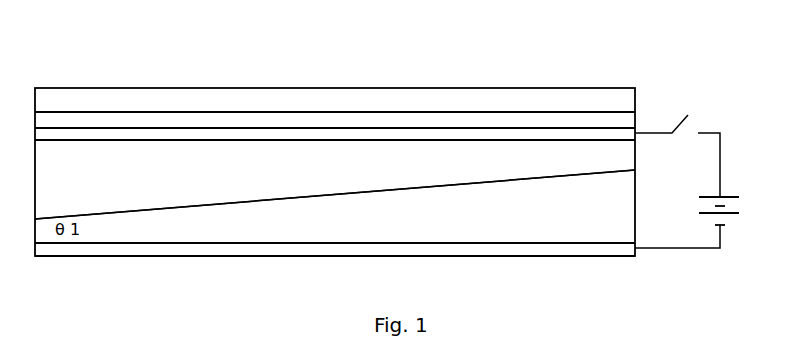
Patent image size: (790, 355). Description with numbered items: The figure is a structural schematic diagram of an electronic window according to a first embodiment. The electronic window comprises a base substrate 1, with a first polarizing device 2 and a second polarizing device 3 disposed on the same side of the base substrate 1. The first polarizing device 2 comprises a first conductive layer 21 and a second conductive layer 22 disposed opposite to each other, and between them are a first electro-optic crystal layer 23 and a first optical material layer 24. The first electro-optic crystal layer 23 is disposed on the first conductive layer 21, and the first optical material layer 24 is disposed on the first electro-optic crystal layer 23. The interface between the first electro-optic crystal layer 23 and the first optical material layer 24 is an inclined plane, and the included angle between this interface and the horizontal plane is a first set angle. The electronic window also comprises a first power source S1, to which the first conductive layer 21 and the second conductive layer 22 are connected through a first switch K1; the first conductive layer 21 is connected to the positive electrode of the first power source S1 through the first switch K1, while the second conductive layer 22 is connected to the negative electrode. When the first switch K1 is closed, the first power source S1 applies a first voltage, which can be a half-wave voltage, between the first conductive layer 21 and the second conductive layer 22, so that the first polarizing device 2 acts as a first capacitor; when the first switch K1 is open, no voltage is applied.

The base substrate 1 is at (538, 103).
The first polarizing device 2 is at (362, 44).
The second polarizing device 3 is at (427, 118).
The first conductive layer 21 is at (272, 250).
The second conductive layer 22 is at (75, 135).
The first electro-optic crystal layer 23 is at (202, 220).
The first optical material layer 24 is at (130, 170).
The first switch K1 is at (677, 145).
The first power source S1 is at (702, 222).